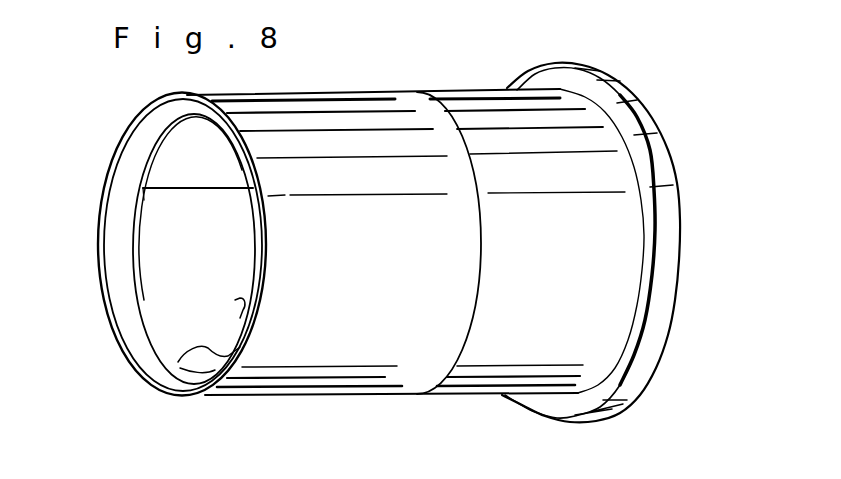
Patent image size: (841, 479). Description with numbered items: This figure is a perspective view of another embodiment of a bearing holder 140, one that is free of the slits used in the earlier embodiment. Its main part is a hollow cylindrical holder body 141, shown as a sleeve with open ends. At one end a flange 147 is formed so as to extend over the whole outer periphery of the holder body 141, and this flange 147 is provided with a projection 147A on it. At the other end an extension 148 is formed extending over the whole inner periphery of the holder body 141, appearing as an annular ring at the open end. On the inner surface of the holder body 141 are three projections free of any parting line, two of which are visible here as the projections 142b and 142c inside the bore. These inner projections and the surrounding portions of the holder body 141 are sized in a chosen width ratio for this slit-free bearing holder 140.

The bearing holder 140 is at (430, 89).
The holder body 141 is at (414, 388).
The flange 147 is at (643, 120).
The projection 147A is at (610, 412).
The extension 148 is at (132, 335).
The projection 142b is at (180, 357).
The projection 142c is at (178, 232).